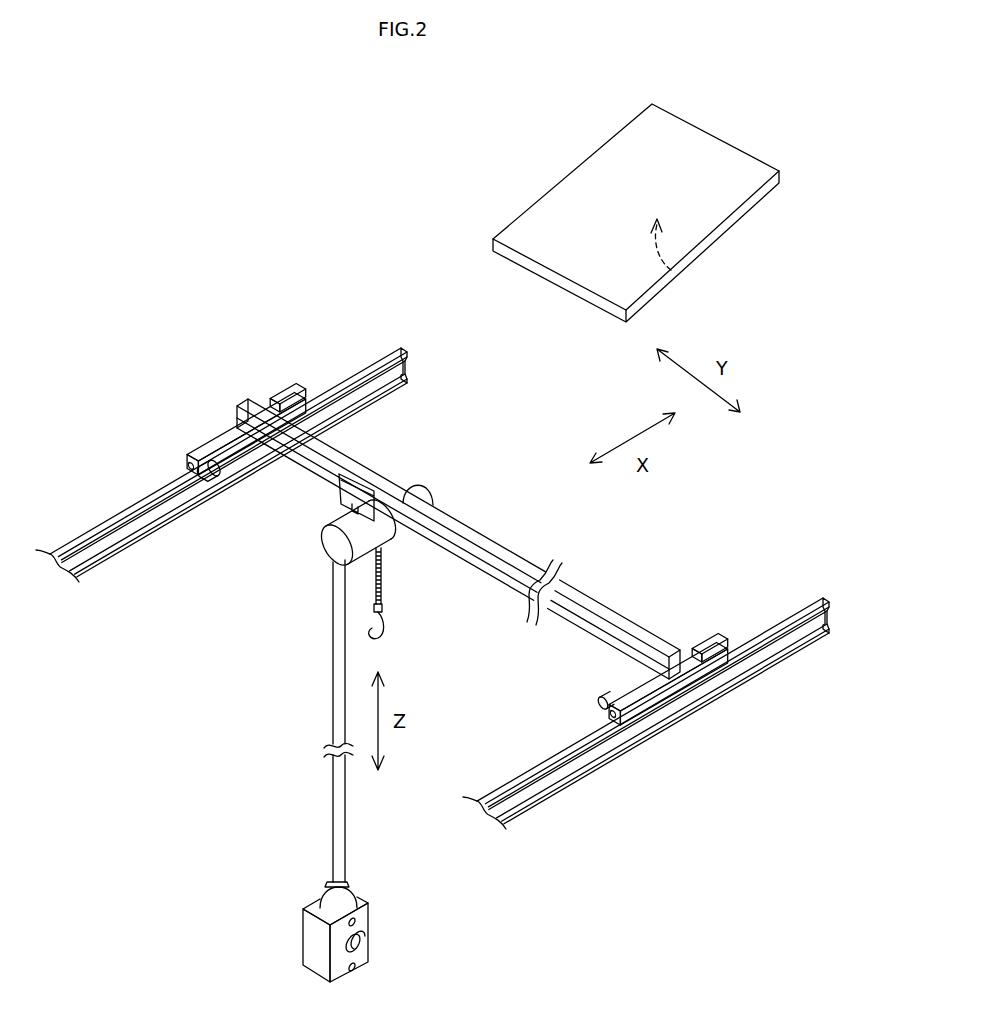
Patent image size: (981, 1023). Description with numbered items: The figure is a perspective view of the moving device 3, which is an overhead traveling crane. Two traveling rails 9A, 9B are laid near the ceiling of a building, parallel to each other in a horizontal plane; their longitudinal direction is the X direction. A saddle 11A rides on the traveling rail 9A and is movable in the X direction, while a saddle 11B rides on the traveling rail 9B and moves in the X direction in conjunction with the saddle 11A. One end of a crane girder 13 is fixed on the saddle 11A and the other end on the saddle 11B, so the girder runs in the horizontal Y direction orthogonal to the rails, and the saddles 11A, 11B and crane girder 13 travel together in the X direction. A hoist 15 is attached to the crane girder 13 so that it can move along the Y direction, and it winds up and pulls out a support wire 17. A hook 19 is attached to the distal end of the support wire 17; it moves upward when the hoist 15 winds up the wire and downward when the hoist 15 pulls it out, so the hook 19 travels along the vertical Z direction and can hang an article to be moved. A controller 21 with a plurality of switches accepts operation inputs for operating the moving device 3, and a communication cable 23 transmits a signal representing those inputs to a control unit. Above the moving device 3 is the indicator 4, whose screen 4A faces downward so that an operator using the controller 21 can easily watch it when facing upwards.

The moving device 3 is at (48, 329).
The indicator 4 is at (705, 162).
The screen 4A is at (676, 268).
The traveling rail 9A is at (388, 353).
The traveling rail 9B is at (807, 600).
The saddle 11A is at (218, 433).
The saddle 11B is at (703, 648).
The crane girder 13 is at (478, 538).
The hoist 15 is at (301, 530).
The support wire 17 is at (383, 570).
The hook 19 is at (385, 630).
The controller 21 is at (313, 945).
The communication cable 23 is at (334, 651).